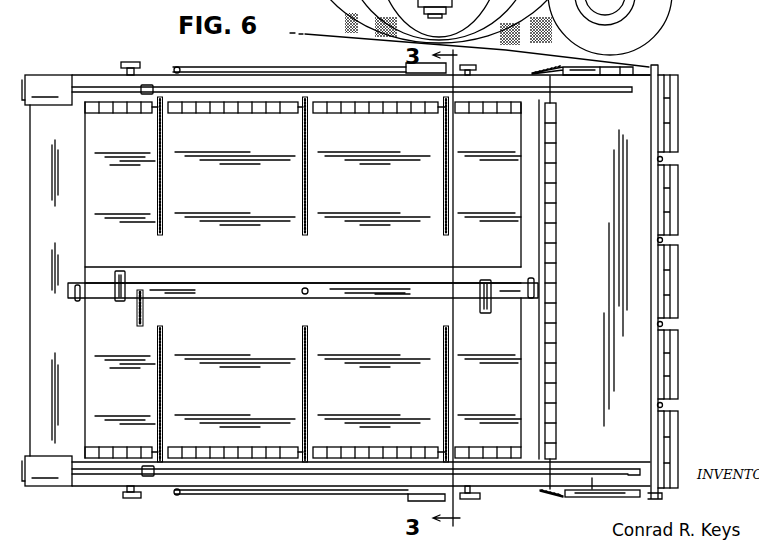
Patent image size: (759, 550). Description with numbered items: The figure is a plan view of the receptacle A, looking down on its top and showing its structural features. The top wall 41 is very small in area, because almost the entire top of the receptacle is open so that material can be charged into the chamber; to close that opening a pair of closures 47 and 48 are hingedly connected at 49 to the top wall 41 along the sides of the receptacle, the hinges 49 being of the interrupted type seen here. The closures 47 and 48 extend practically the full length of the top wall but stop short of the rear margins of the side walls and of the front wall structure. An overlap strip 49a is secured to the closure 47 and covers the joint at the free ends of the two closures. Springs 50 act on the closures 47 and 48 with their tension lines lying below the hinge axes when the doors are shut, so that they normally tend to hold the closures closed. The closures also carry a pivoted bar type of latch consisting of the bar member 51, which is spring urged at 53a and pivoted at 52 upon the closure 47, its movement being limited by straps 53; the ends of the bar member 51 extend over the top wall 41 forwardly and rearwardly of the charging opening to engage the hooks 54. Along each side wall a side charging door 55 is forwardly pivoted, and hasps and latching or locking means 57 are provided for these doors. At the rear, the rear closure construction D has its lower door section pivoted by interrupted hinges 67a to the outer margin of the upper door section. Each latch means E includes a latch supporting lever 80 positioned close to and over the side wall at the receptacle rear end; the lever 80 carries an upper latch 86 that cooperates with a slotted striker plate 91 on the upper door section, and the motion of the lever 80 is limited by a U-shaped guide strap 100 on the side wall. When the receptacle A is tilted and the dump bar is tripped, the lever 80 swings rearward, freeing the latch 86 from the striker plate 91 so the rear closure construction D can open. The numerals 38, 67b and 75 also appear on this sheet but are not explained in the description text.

The receptacle A is at (94, 64).
The bolt 38 is at (136, 56).
The top wall 41 is at (57, 280).
The closure 47 is at (505, 362).
The closure 48 is at (522, 166).
The hinges 49 is at (228, 113).
The overlap strip 49a is at (392, 290).
The springs 50 is at (164, 190).
The bar member 51 is at (370, 281).
The pivot 52 is at (302, 294).
The straps 53 is at (124, 276).
The spring 53a is at (141, 313).
The hooks 54 is at (77, 298).
The side charging doors 55 is at (288, 68).
The latching or locking means 57 is at (420, 501).
The interrupted hinges 67a is at (679, 223).
The side chain column 67b is at (557, 216).
The end box 75 is at (45, 97).
The latch supporting lever 80 is at (568, 497).
The upper latch 86 is at (606, 480).
The striker plate 91 is at (658, 70).
The U-shaped guide straps 100 is at (603, 497).
The rear closure construction D is at (681, 184).
The latch means E is at (634, 63).